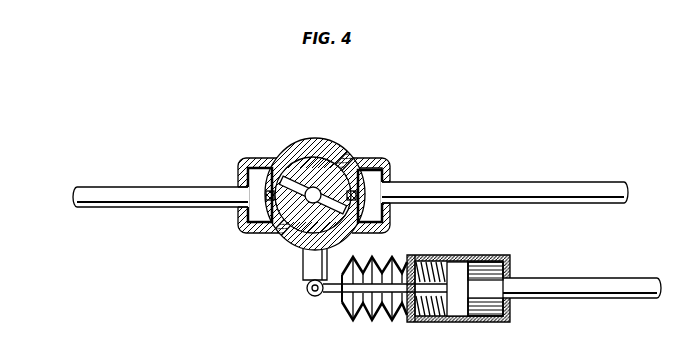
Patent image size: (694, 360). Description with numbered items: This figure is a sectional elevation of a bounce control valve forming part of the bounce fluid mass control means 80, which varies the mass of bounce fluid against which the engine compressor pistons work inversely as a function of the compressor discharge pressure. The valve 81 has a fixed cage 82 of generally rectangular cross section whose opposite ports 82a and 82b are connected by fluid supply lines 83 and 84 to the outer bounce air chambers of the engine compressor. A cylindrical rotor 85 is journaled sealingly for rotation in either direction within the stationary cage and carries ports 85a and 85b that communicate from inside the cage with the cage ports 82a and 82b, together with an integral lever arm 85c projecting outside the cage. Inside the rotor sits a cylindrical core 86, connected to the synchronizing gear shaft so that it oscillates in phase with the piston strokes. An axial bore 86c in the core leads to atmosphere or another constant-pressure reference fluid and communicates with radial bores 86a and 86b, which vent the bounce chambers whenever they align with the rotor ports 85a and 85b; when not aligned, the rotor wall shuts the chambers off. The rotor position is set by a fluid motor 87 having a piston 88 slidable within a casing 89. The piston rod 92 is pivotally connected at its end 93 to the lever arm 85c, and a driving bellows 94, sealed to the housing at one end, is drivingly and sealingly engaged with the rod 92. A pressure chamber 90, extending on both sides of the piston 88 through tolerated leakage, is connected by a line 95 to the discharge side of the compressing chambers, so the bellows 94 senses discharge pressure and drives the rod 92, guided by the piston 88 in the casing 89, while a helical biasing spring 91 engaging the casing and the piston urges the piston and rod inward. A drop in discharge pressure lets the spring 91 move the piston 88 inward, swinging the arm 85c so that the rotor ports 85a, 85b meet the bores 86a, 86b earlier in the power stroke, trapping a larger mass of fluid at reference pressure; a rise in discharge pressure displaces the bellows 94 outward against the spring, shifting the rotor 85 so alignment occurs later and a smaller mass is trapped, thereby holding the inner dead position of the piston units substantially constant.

The bounce fluid mass control means 80 is at (460, 325).
The valve 81 is at (233, 218).
The fixed cage 82 is at (240, 158).
The port of cage 82a is at (241, 190).
The port of cage 82b is at (390, 187).
The fluid supply line 83 is at (143, 196).
The fluid supply line 84 is at (463, 188).
The cylindrical rotor 85 is at (257, 235).
The rotor port 85a is at (257, 168).
The rotor port 85b is at (392, 212).
The lever arm 85c is at (303, 268).
The cylindrical core 86 is at (312, 167).
The radial bore 86a is at (283, 180).
The radial bore 86b is at (360, 175).
The axial bore 86c is at (330, 152).
The fluid motor 87 is at (495, 328).
The piston 88 is at (460, 270).
The casing 89 is at (424, 322).
The pressure chamber 90 is at (506, 265).
The biasing spring 91 is at (438, 266).
The piston rod 92 is at (359, 320).
The rod end 93 is at (311, 294).
The driving bellows 94 is at (398, 255).
The line 95 is at (573, 290).